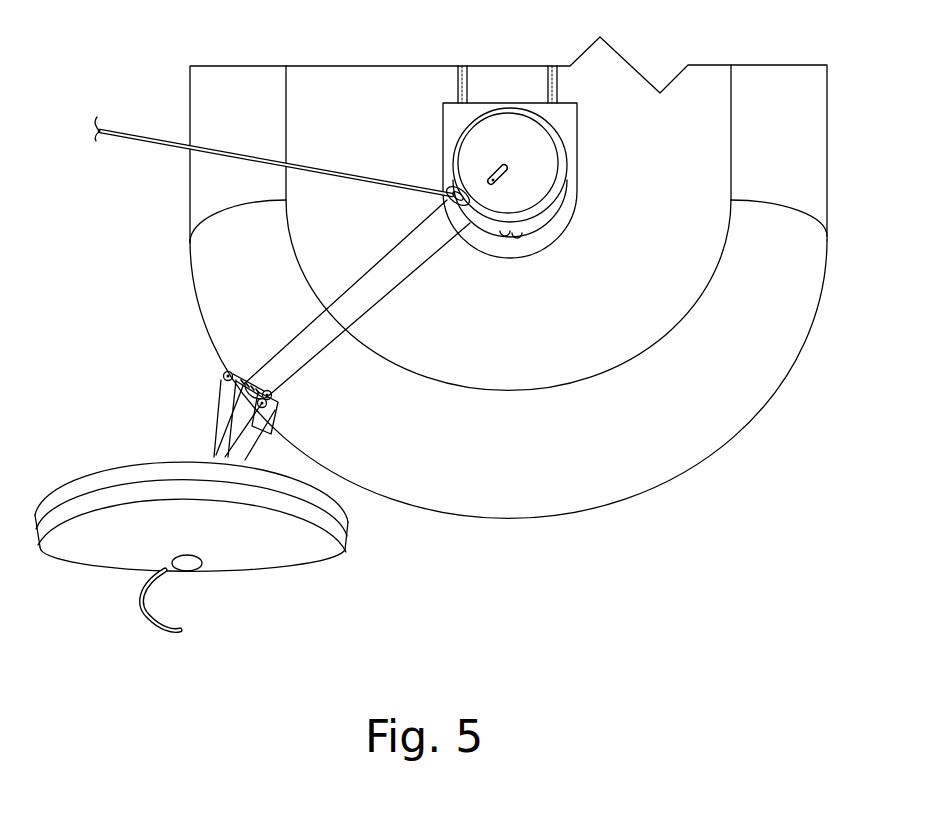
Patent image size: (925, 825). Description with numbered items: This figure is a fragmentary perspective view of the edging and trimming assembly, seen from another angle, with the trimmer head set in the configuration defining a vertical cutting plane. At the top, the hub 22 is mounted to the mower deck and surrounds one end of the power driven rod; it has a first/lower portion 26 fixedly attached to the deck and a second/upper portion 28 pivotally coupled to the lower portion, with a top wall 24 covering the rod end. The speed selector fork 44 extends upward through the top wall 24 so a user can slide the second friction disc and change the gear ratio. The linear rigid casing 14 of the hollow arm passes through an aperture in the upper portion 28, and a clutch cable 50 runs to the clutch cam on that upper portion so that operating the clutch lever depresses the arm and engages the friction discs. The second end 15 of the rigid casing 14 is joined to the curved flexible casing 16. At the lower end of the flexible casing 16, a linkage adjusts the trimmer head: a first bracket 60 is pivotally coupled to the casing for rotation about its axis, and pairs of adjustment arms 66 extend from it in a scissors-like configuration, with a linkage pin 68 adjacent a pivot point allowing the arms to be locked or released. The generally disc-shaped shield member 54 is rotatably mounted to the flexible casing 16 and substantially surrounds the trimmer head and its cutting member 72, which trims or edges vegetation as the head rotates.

The rigid casing 14 is at (395, 297).
The second end of the rigid casing 15 is at (262, 390).
The flexible casing 16 is at (186, 427).
The hub 22 is at (508, 84).
The top wall 24 is at (552, 185).
The first/lower portion 26 is at (577, 122).
The second/upper portion 28 is at (563, 150).
The speed selector fork 44 is at (487, 178).
The clutch cable 50 is at (163, 143).
The shield member 54 is at (254, 374).
The first bracket 60 is at (280, 418).
The adjustment arms 66 is at (285, 457).
The linkage pin 68 is at (278, 396).
The cutting member 72 is at (157, 623).